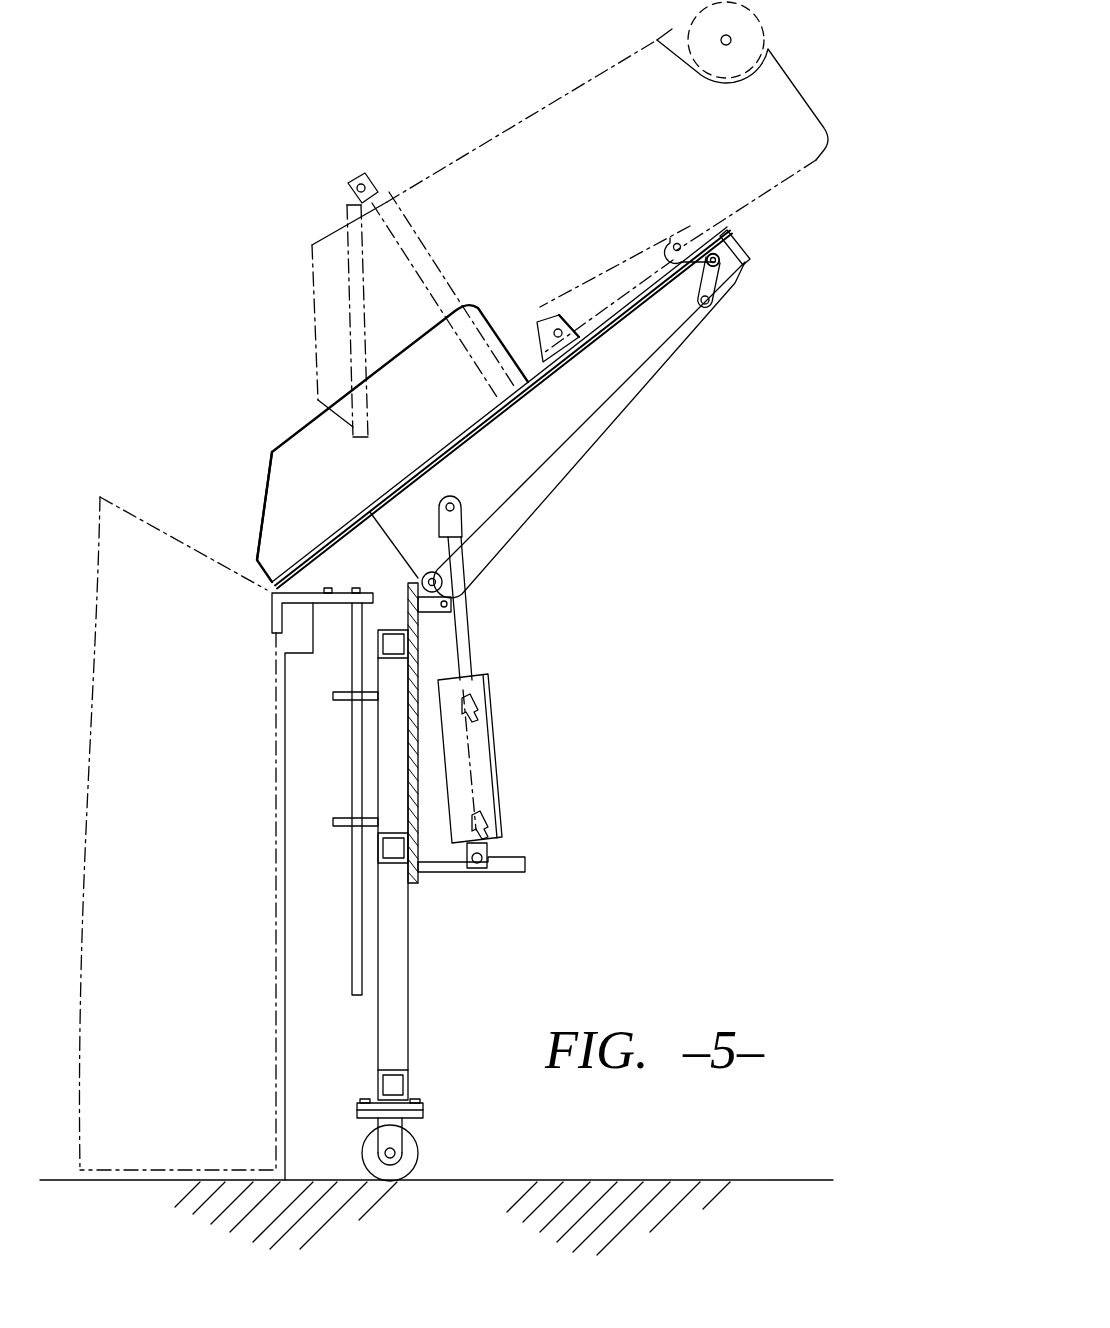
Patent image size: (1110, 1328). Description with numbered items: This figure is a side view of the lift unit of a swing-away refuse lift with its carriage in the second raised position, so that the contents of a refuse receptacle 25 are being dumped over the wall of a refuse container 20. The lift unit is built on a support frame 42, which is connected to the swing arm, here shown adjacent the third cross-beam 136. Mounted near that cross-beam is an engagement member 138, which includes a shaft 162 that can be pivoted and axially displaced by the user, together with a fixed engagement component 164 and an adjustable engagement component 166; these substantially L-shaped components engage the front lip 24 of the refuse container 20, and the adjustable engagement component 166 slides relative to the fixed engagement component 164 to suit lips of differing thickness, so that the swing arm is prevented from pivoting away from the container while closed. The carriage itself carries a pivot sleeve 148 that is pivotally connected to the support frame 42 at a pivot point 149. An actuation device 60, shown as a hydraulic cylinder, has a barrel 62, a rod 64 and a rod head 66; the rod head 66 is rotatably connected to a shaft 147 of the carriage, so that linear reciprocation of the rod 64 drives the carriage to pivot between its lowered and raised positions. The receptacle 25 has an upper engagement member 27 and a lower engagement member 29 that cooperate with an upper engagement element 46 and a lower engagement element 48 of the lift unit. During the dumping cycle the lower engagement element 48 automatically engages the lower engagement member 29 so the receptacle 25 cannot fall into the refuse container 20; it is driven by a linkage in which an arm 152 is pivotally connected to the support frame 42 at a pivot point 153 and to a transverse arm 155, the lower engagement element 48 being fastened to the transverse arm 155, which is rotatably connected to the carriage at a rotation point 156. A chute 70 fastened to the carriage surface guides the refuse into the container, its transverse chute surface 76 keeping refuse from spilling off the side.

The refuse container 20 is at (163, 528).
The front lip 24 is at (308, 660).
The refuse receptacle 25 is at (543, 107).
The upper engagement member 27 is at (560, 317).
The lower engagement member 29 is at (687, 230).
The support frame 42 is at (412, 887).
The upper engagement element 46 is at (575, 312).
The lower engagement element 48 is at (683, 300).
The actuation device 60 is at (512, 742).
The barrel 62 is at (500, 770).
The rod 64 is at (492, 608).
The rod head 66 is at (465, 512).
The chute 70 is at (302, 430).
The transverse chute surface 76 is at (285, 492).
The third cross-beam 136 is at (373, 1027).
The engagement member 138 is at (333, 637).
The shaft 147 is at (463, 507).
The pivot sleeve 148 is at (443, 570).
The pivot point 149 is at (452, 590).
The arm 152 is at (607, 433).
The pivot point 153 is at (467, 617).
The transverse arm 155 is at (722, 258).
The rotation point 156 is at (733, 236).
The shaft 162 is at (348, 877).
The fixed engagement component 164 is at (310, 627).
The adjustable engagement component 166 is at (272, 608).